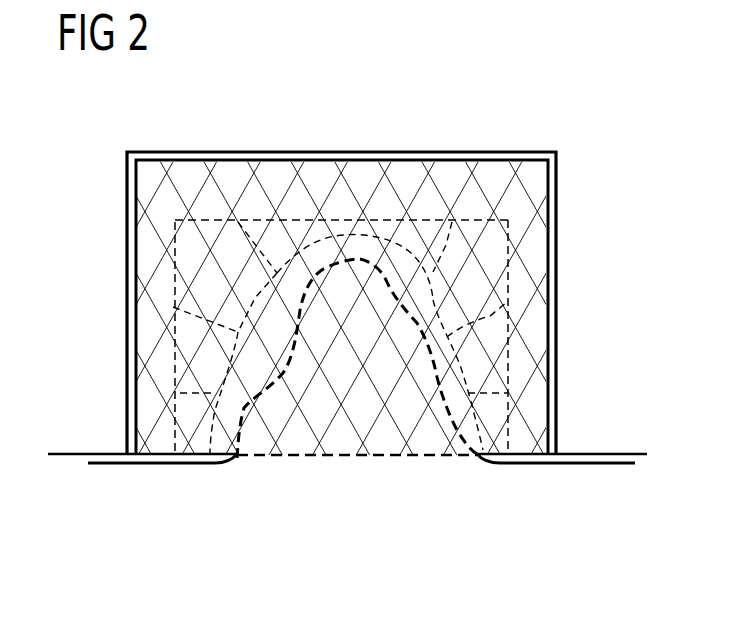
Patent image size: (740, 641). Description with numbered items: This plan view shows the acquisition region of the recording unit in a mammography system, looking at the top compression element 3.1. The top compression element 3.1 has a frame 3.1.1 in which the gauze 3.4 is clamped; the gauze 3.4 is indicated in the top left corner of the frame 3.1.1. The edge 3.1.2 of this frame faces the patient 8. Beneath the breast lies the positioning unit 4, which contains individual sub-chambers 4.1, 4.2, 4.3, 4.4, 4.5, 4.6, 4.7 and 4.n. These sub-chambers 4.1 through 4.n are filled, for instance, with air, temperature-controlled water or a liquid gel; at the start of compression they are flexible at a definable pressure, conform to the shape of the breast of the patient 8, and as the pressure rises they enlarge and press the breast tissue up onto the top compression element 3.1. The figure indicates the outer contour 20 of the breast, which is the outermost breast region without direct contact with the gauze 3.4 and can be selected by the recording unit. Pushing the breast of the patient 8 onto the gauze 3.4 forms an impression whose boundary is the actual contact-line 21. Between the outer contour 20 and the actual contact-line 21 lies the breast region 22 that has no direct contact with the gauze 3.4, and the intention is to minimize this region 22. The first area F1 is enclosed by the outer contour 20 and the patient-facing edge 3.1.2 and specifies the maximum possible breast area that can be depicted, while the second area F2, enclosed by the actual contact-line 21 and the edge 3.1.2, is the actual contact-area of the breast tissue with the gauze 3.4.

The top compression element 3.1 is at (532, 150).
The frame of the top compression element 3.1.1 is at (463, 156).
The edge of the frame facing the patient 3.1.2 is at (433, 457).
The gauze 3.4 is at (190, 175).
The positioning unit 4 is at (155, 284).
The sub-chamber 4.1 is at (492, 343).
The sub-chamber 4.2 is at (488, 257).
The sub-chamber 4.3 is at (402, 244).
The sub-chamber 4.4 is at (299, 230).
The sub-chamber 4.5 is at (196, 257).
The sub-chamber 4.6 is at (204, 372).
The sub-chamber 4.7 is at (196, 425).
The sub-chamber 4.n is at (493, 420).
The outer contour of the breast 20 is at (357, 245).
The actual contact-line 21 is at (437, 374).
The breast region without direct contact 22 is at (427, 318).
The first area F1 is at (272, 334).
The second area F2 is at (338, 433).
The patient 8 is at (290, 474).